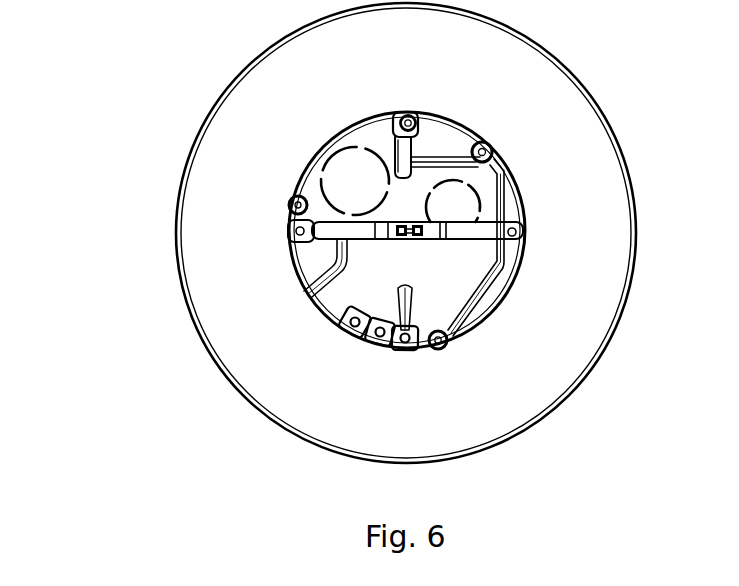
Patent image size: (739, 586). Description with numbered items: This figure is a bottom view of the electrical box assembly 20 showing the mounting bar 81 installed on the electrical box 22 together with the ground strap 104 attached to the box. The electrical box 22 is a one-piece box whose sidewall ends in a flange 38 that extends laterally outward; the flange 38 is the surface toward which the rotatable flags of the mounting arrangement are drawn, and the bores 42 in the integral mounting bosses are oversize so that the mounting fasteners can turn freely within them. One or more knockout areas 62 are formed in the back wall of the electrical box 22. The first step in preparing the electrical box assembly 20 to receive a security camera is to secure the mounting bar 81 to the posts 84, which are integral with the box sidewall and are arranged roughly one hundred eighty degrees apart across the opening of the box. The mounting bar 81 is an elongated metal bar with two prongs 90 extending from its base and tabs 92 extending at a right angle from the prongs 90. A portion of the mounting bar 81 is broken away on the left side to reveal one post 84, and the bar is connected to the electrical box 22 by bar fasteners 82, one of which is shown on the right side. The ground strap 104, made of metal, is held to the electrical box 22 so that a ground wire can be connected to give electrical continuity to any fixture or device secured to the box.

The electrical box assembly 20 is at (143, 101).
The electrical box 22 is at (222, 370).
The flange 38 is at (406, 66).
The bores 42 is at (491, 146).
The knockout areas 62 is at (367, 192).
The mounting bar 81 is at (530, 200).
The bar fasteners 82 is at (487, 233).
The posts 84 is at (291, 227).
The prongs 90 is at (395, 238).
The tabs 92 is at (342, 251).
The ground strap 104 is at (364, 342).